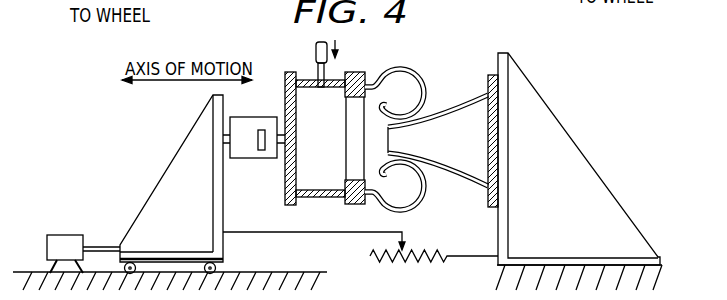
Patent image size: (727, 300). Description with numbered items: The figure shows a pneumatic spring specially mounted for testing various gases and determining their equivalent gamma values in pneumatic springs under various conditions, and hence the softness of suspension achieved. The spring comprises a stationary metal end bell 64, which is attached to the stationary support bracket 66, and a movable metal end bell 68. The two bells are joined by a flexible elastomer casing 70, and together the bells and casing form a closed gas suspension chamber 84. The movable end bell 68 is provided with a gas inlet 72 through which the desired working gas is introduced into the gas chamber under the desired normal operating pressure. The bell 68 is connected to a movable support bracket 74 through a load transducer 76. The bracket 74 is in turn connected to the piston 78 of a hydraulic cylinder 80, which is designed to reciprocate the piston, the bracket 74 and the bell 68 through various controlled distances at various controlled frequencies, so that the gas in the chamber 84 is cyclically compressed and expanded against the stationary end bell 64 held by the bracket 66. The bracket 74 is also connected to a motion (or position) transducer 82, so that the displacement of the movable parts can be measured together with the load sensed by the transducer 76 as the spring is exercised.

The stationary metal end bell 64 is at (448, 112).
The stationary support bracket 66 is at (557, 180).
The movable metal end bell 68 is at (338, 73).
The flexible elastomer casing 70 is at (418, 73).
The gas inlet 72 is at (316, 50).
The movable support bracket 74 is at (188, 198).
The load transducer 76 is at (246, 158).
The piston 78 is at (98, 246).
The hydraulic cylinder 80 is at (65, 235).
The motion transducer 82 is at (420, 251).
The closed gas suspension chamber 84 is at (385, 144).